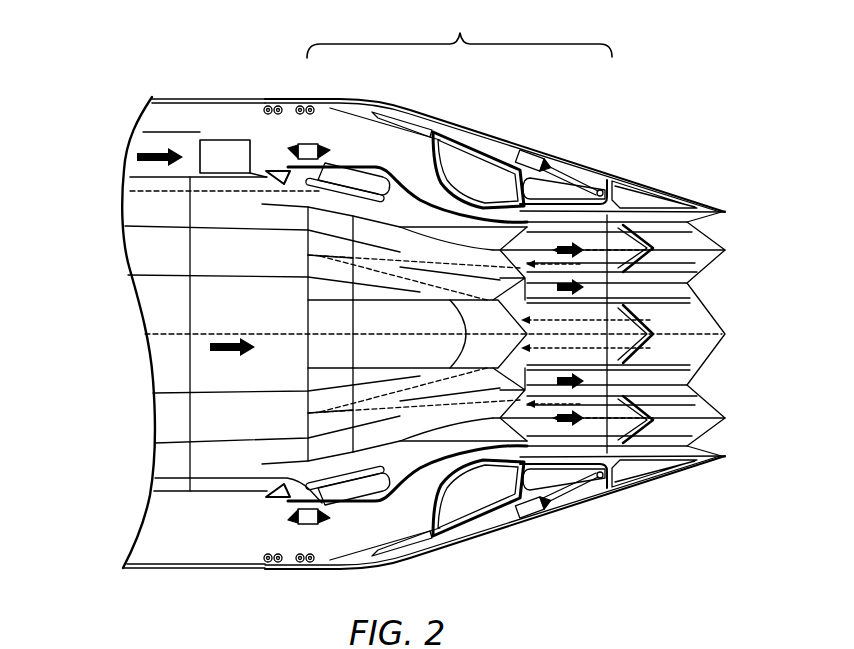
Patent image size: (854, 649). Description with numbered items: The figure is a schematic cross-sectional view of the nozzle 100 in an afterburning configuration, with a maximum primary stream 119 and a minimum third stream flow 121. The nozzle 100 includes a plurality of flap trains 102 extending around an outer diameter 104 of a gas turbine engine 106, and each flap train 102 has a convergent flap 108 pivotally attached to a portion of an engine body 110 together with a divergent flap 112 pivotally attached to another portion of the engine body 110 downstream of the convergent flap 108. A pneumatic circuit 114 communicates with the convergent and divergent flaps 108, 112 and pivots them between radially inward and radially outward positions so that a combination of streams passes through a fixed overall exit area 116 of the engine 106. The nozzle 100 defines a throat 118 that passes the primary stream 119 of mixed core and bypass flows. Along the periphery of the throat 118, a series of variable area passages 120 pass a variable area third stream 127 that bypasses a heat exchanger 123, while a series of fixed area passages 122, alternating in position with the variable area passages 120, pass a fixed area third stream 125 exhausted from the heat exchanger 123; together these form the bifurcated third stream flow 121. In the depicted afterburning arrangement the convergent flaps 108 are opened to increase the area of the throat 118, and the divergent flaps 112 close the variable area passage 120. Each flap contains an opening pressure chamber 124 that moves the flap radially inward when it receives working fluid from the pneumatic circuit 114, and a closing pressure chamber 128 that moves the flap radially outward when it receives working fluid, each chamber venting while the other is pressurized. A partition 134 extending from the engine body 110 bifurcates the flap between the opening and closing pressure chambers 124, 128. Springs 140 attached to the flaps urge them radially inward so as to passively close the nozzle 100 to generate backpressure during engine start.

The nozzle 100 is at (661, 173).
The flap train 102 is at (459, 33).
The outer diameter 104 is at (320, 100).
The gas turbine engine 106 is at (86, 80).
The convergent flap 108 is at (393, 210).
The engine body 110 is at (158, 97).
The divergent flap 112 is at (437, 180).
The pneumatic circuit 114 is at (213, 98).
The fixed overall exit area 116 is at (758, 327).
The throat 118 is at (130, 344).
The primary stream 119 is at (210, 347).
The variable area passage 120 is at (347, 145).
The third stream flow 121 is at (137, 158).
The fixed area passage 122 is at (531, 294).
The heat exchanger 123 is at (143, 132).
The opening pressure chamber 124 is at (317, 188).
The fixed area third stream 125 is at (700, 268).
The variable area third stream 127 is at (690, 233).
The closing pressure chamber 128 is at (362, 173).
The partition 134 is at (378, 168).
The spring 140 is at (298, 146).